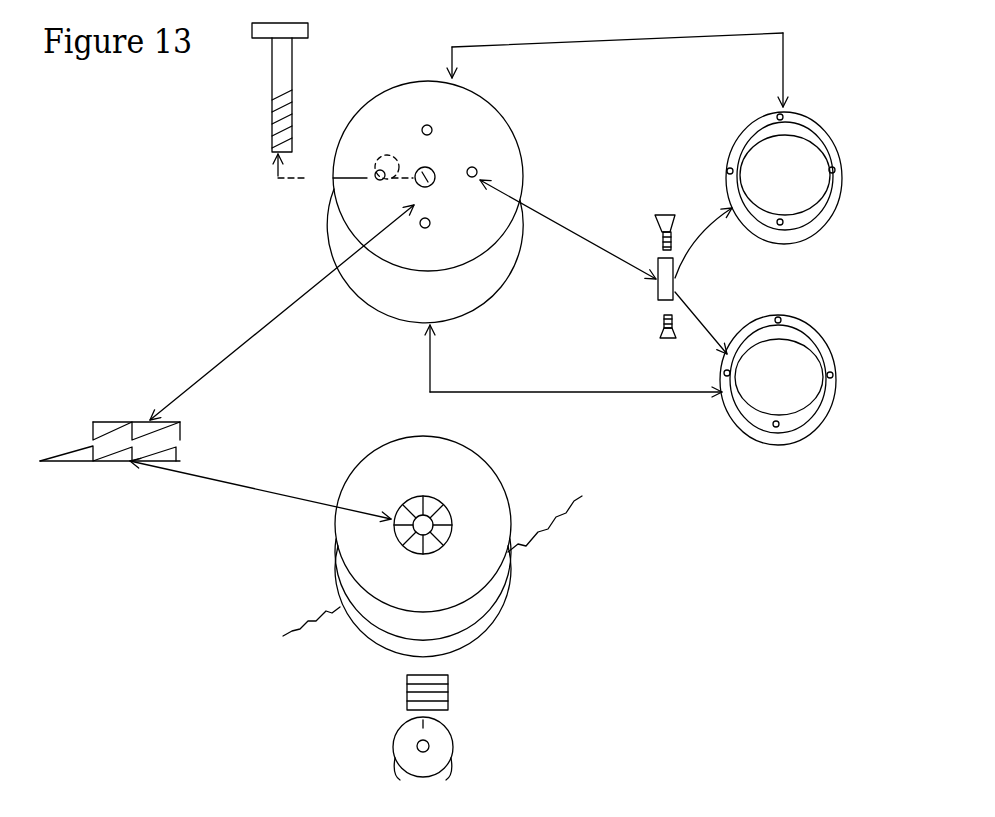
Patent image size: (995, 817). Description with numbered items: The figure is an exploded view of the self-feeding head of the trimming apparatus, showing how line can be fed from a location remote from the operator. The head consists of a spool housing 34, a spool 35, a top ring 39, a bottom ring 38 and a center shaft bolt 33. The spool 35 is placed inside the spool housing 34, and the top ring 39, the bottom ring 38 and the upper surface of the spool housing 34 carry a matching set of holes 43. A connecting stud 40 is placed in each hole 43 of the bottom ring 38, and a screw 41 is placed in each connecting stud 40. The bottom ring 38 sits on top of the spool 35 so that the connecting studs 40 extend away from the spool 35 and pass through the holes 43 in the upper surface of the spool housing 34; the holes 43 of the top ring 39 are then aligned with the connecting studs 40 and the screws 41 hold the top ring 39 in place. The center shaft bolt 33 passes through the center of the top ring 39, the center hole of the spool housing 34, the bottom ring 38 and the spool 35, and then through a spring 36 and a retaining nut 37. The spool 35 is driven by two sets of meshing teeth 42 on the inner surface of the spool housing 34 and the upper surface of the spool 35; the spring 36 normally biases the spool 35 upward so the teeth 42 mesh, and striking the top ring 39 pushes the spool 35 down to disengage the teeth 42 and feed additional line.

The center shaft bolt 33 is at (268, 139).
The spool housing 34 is at (330, 256).
The spool 35 is at (357, 468).
The spring 36 is at (450, 692).
The retaining nut 37 is at (456, 748).
The bottom ring 38 is at (800, 443).
The top ring 39 is at (813, 242).
The connecting stud 40 is at (676, 283).
The screw 41 is at (659, 239).
The meshing teeth 42 is at (73, 444).
The holes 43 is at (390, 173).